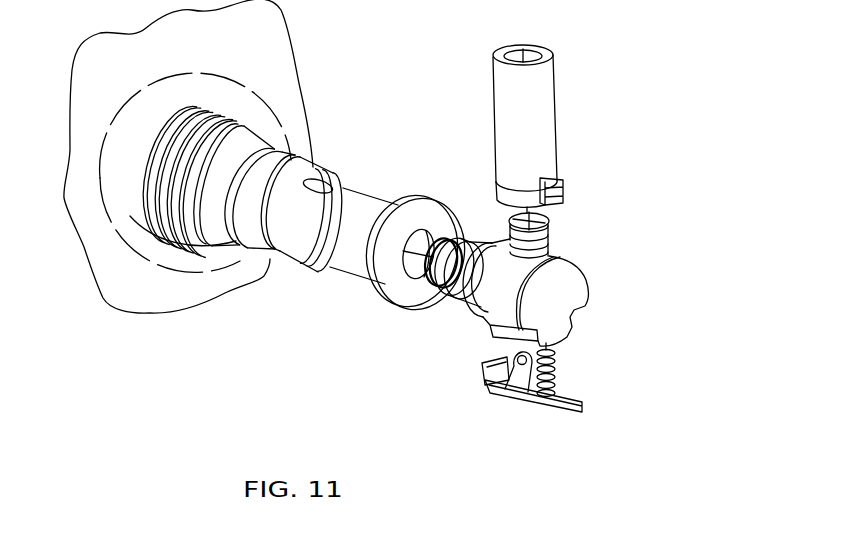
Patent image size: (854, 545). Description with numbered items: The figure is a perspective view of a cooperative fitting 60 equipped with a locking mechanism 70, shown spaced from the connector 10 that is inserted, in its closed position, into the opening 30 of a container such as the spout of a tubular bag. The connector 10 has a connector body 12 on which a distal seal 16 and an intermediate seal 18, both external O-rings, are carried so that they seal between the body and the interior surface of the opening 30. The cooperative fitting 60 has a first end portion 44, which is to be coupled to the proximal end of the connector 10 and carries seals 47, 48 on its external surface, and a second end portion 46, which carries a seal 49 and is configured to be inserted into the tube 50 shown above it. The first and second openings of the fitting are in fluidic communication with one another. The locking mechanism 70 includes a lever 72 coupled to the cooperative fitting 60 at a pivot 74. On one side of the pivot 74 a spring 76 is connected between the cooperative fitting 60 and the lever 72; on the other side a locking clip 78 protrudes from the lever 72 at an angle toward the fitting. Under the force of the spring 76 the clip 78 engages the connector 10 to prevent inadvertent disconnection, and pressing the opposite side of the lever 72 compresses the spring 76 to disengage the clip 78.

The connector 10 is at (389, 116).
The connector body 12 is at (383, 208).
The distal seal 16 is at (278, 258).
The intermediate seal 18 is at (327, 272).
The opening 30 is at (145, 222).
The first end portion 44 is at (459, 318).
The second end portion 46 is at (572, 231).
The seal 47 is at (443, 285).
The seal 48 is at (462, 240).
The seal 49 is at (547, 221).
The tube 50 is at (558, 112).
The cooperative fitting 60 is at (594, 259).
The locking mechanism 70 is at (661, 367).
The lever 72 is at (565, 391).
The pivot 74 is at (523, 372).
The spring 76 is at (557, 355).
The locking clip 78 is at (472, 378).